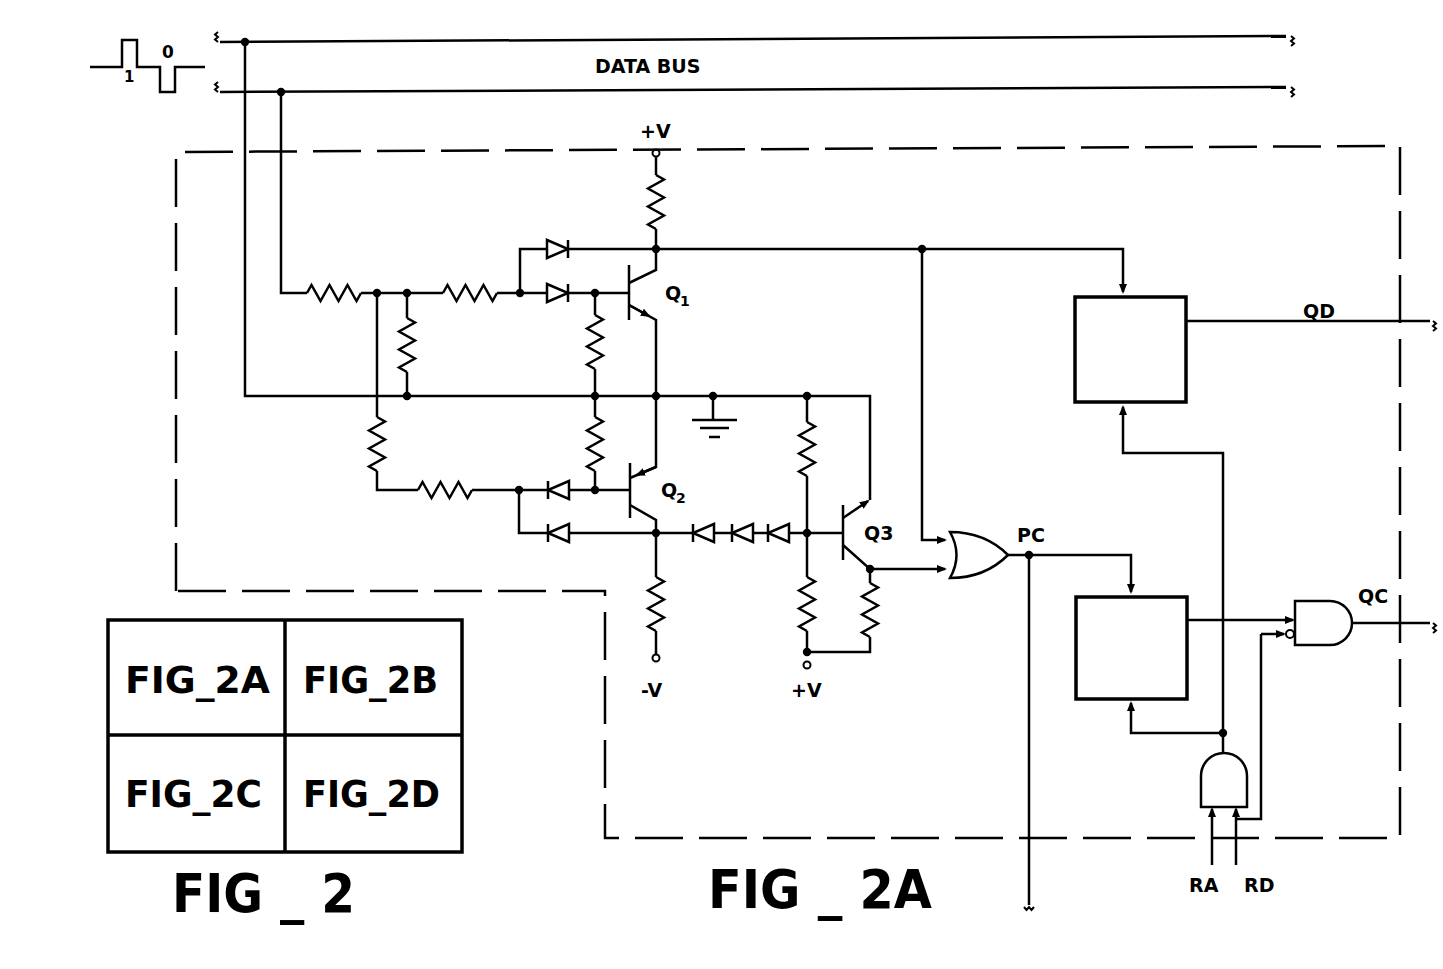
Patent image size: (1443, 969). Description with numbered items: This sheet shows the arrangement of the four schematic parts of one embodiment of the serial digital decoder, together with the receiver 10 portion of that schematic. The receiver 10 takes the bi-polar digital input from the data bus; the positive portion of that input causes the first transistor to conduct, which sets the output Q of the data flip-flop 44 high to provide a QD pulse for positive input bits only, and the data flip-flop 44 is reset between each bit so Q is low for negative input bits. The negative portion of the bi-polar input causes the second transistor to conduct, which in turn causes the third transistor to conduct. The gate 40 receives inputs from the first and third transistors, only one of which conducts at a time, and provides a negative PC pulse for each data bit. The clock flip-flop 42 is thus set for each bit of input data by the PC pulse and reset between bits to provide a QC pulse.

The receiver 10 is at (895, 833).
The gate 40 is at (972, 534).
The clock flip-flop 42 is at (1097, 700).
The data flip-flop 44 is at (1075, 350).